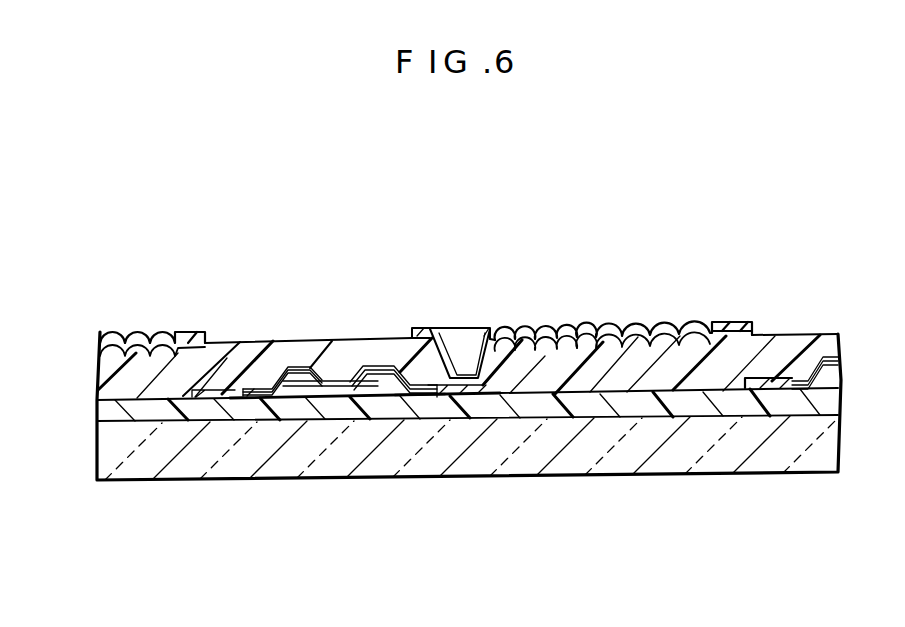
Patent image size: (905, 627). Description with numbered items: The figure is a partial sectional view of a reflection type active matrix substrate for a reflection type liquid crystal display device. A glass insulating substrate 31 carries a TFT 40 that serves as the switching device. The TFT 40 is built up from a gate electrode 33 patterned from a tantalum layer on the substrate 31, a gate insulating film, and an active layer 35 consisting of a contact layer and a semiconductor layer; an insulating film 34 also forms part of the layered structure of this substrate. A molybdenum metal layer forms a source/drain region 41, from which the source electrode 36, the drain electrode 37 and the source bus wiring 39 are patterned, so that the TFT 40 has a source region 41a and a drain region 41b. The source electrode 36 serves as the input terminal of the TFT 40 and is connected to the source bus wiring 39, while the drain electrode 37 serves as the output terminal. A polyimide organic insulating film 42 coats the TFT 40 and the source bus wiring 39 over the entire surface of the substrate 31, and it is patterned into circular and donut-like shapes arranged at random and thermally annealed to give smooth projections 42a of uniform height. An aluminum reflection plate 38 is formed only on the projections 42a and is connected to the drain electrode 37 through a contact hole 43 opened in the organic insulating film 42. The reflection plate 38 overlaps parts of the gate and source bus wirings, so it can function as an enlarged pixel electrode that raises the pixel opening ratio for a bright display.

The insulating substrate 31 is at (136, 438).
The gate electrode 33 is at (352, 381).
The insulating film 34 is at (189, 390).
The active layer 35 is at (314, 366).
The source electrode 36 is at (268, 388).
The drain electrode 37 is at (387, 365).
The reflection plate 38 is at (112, 337).
The source bus wiring 39 is at (212, 396).
The TFT 40 is at (462, 197).
The source/drain region 41 is at (432, 532).
The source region 41a is at (265, 418).
The drain region 41b is at (402, 397).
The organic insulating film 42 is at (134, 350).
The projection 42a is at (579, 345).
The contact hole 43 is at (462, 375).